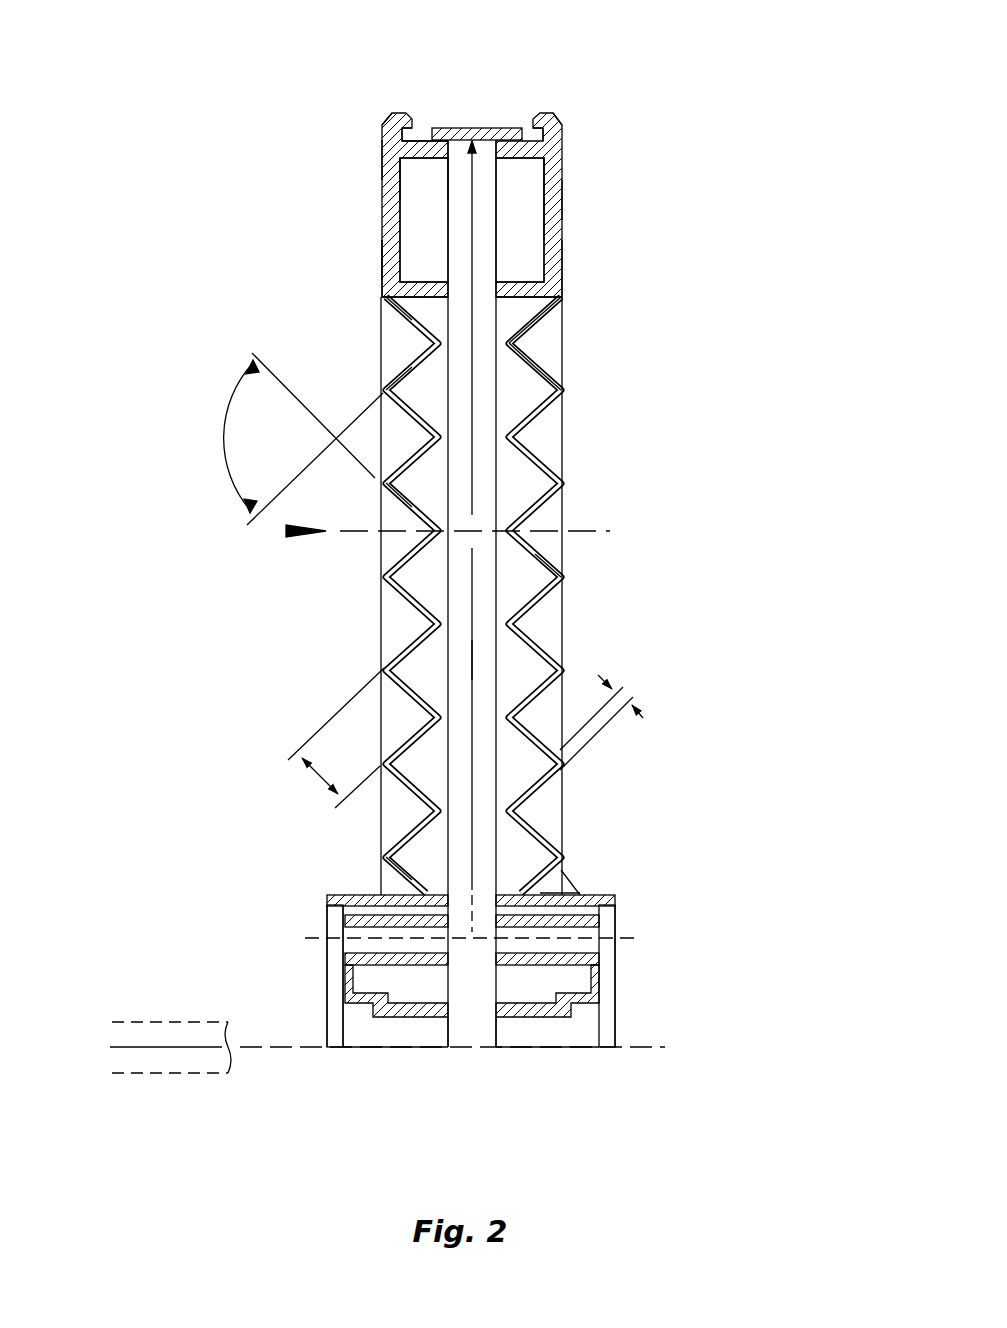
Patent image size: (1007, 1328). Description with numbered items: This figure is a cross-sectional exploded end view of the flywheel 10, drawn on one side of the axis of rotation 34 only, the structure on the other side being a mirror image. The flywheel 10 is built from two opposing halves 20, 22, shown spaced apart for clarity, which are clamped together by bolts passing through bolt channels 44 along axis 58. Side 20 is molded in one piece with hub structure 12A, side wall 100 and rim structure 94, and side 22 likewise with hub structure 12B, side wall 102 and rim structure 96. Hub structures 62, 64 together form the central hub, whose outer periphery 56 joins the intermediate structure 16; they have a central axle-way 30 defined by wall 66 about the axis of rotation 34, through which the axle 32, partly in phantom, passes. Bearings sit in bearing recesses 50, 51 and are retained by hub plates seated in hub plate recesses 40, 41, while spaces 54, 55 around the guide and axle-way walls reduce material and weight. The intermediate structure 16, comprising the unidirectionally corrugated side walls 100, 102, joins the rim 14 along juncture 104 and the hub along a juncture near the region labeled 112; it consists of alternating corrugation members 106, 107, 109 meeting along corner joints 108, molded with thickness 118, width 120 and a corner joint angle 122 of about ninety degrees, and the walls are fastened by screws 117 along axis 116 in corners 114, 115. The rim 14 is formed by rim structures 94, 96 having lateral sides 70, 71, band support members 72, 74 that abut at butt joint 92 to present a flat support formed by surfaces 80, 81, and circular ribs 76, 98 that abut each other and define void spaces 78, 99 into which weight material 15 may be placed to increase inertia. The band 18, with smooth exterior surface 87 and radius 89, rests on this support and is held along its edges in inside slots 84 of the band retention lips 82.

The flywheel 10 is at (275, 262).
The hub structure 12A is at (608, 893).
The hub structure 12B is at (325, 900).
The annular rim 14 is at (560, 192).
The weight material 15 is at (409, 237).
The intermediate structure 16 is at (684, 511).
The band 18 is at (445, 128).
The half (side) of flywheel 20 is at (545, 1095).
The half (side) of flywheel 22 is at (397, 1070).
The axle-way 30 is at (545, 1030).
The axle 32 is at (140, 1073).
The axis of rotation 34 is at (273, 1047).
The hub plate recess 40 is at (605, 983).
The hub plate recess 41 is at (327, 1028).
The bolt channel 44 is at (588, 933).
The bearing recess 50 is at (575, 1005).
The bearing recess 51 is at (357, 1013).
The space 54 is at (592, 1002).
The space 55 is at (578, 893).
The outer periphery of hub 56 is at (575, 893).
The bolt axis 58 is at (617, 938).
The hub structure 62 is at (625, 1006).
The hub structure 64 is at (320, 975).
The axle-way wall 66 is at (480, 1035).
The lateral side of rim 70 is at (560, 262).
The lateral side of rim 71 is at (398, 280).
The band support member 72 is at (530, 140).
The band support member 74 is at (412, 147).
The circular rib 76 is at (548, 308).
The void space 78 is at (530, 208).
The band support surface 80 is at (533, 138).
The band support surface 81 is at (415, 137).
The band retention means (lip) 82 is at (398, 118).
The inside slot 84 is at (412, 135).
The exterior surface of band 87 is at (485, 128).
The radius 89 is at (473, 660).
The butt joint 92 is at (450, 160).
The rim structure 94 is at (660, 196).
The rim structure 96 is at (322, 150).
The circular rib 98 is at (400, 308).
The void space 99 is at (416, 178).
The side wall 100 is at (592, 465).
The side wall 102 is at (360, 645).
The juncture 104 is at (388, 882).
The corrugation member 106 is at (550, 340).
The corrugation member 107 is at (548, 370).
The corner joint 108 is at (545, 417).
The corrugation member 109 is at (392, 370).
The bellows upper end 112 is at (392, 300).
The corner 114 is at (572, 553).
The corner 115 is at (388, 545).
The screw axis 116 is at (583, 533).
The screw 117 is at (318, 525).
The thickness 118 is at (622, 722).
The width 120 is at (320, 777).
The corner joint angle 122 is at (279, 439).